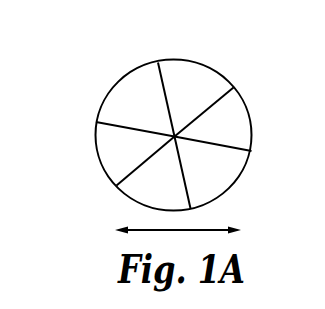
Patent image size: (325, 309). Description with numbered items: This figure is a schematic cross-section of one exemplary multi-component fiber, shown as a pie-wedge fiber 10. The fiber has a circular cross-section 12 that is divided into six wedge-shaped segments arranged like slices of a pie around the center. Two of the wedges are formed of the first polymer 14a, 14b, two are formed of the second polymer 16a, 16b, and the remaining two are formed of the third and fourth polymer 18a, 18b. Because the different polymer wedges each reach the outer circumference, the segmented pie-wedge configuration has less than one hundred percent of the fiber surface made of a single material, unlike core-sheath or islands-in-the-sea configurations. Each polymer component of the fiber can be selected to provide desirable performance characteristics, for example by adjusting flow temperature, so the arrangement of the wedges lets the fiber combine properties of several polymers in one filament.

The pie-wedge fiber 10 is at (143, 52).
The circular cross-section 12 is at (203, 230).
The first polymer 14a is at (110, 149).
The first polymer 14b is at (197, 80).
The second polymer 16a is at (133, 95).
The second polymer 16b is at (233, 125).
The third polymer 18a is at (142, 193).
The fourth polymer 18b is at (220, 172).